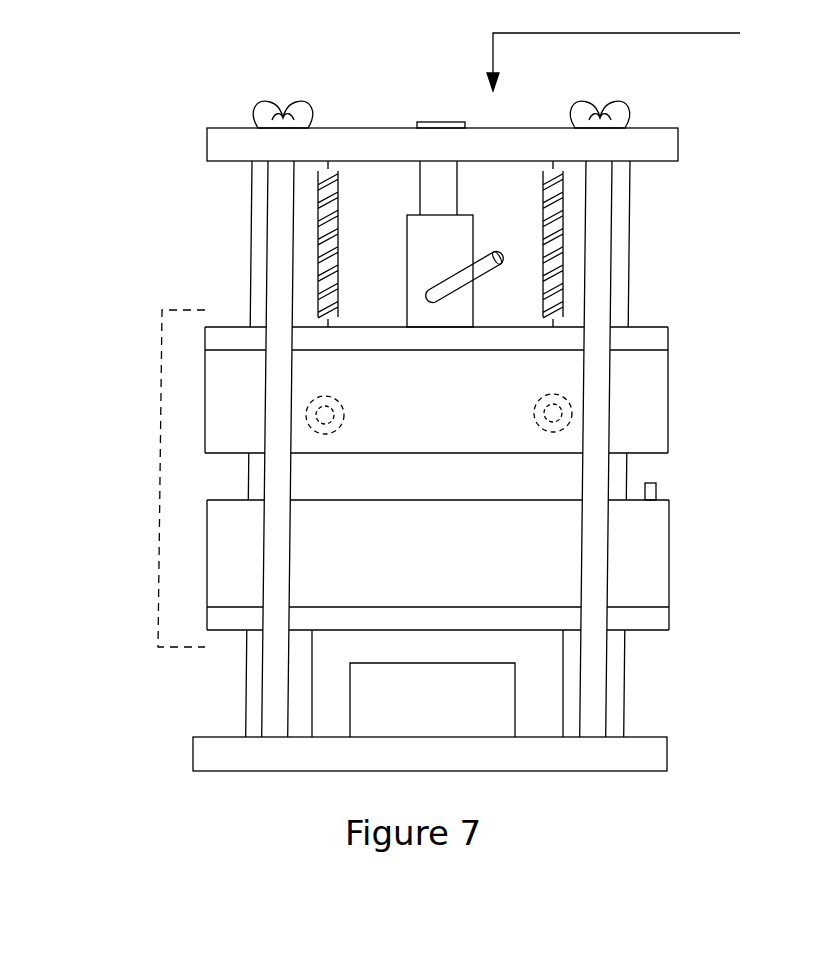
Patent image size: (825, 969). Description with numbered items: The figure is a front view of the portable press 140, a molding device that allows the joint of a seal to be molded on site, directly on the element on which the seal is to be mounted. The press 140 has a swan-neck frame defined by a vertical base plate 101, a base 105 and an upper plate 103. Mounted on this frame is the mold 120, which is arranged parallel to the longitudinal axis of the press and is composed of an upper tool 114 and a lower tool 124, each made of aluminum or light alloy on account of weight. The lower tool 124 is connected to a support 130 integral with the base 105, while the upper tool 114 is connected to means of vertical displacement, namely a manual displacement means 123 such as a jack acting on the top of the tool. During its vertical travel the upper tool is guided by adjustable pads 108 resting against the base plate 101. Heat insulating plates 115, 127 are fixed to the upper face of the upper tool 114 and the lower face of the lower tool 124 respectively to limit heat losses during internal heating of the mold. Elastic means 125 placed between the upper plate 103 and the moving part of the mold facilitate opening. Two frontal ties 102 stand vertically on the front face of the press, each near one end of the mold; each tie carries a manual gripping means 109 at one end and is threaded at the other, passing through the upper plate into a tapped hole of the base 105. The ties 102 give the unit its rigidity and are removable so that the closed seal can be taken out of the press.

The portable press 140 is at (652, 57).
The manual gripping means 109 is at (618, 117).
The upper plate 103 is at (643, 150).
The elastic means 125 is at (562, 262).
The manual displacement means 123 is at (452, 305).
The vertical base plate 101 is at (623, 305).
The frontal ties 102 is at (597, 680).
The heat insulating plate 115 is at (653, 338).
The upper tool 114 is at (648, 430).
The adjustable pads 108 is at (565, 427).
The lower tool 124 is at (647, 555).
The heat insulating plate 127 is at (666, 618).
The support 130 is at (536, 713).
The base 105 is at (635, 755).
The mold 120 is at (142, 478).